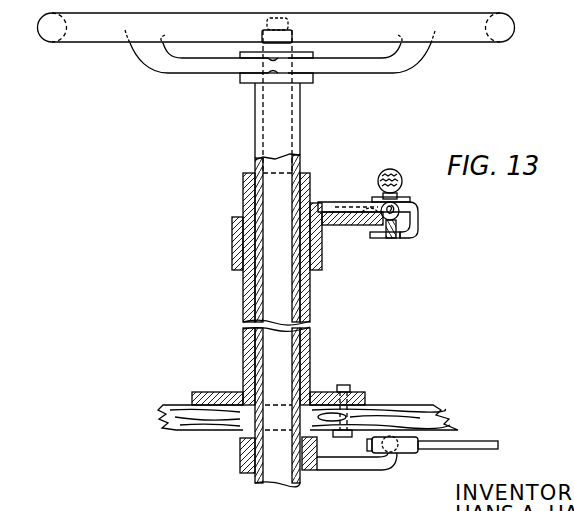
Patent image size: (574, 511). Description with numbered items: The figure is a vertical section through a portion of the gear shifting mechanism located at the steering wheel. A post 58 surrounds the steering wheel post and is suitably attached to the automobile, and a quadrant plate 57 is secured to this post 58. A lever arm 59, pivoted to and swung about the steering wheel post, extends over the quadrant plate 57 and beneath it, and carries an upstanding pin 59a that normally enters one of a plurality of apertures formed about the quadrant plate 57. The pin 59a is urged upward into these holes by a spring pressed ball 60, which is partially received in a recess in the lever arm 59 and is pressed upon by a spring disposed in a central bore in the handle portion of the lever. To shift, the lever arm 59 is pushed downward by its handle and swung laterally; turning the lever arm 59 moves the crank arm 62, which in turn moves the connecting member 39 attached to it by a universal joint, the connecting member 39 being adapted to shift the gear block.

The connecting member 39 is at (437, 446).
The quadrant plate 57 is at (332, 226).
The post 58 is at (310, 349).
The lever arm 59 is at (330, 203).
The upstanding pin 59a is at (405, 238).
The spring pressed ball 60 is at (402, 205).
The crank arm 62 is at (352, 460).